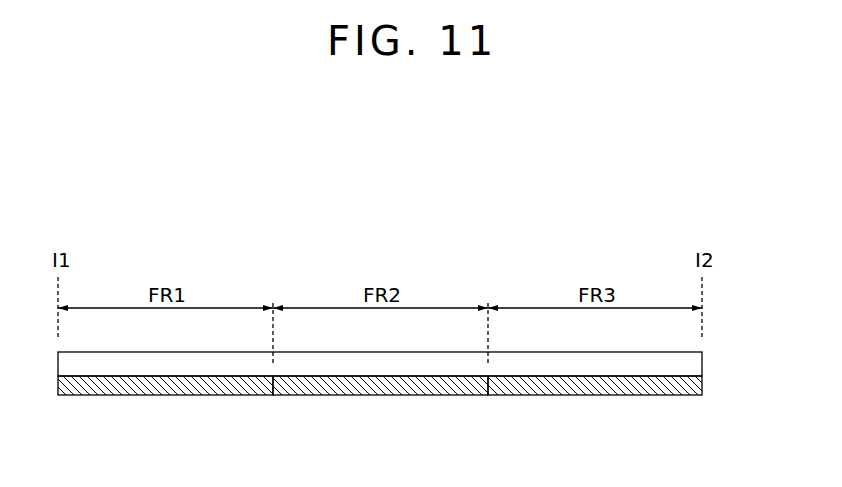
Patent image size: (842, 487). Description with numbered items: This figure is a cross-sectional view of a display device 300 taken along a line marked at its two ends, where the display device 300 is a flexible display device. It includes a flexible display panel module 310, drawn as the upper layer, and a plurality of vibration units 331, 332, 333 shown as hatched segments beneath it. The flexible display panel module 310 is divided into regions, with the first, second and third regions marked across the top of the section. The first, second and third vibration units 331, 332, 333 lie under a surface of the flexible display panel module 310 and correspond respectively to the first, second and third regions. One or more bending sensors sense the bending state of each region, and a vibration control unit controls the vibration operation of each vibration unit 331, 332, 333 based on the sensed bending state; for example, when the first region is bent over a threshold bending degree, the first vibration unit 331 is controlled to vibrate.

The display device 300 is at (463, 220).
The flexible display panel module 310 is at (693, 362).
The first vibration unit 331 is at (165, 395).
The second vibration unit 332 is at (384, 395).
The third vibration unit 333 is at (603, 395).